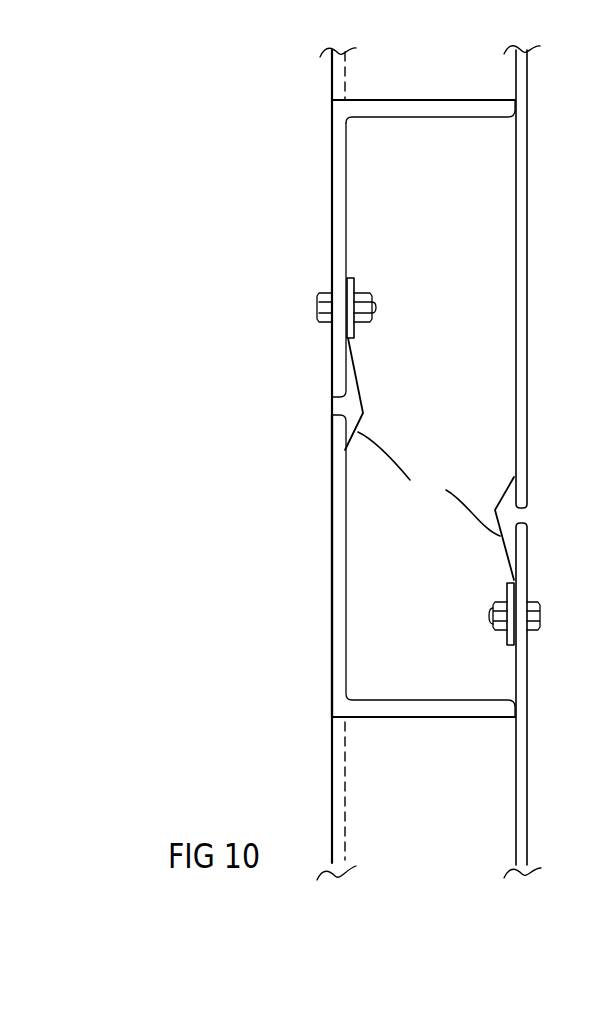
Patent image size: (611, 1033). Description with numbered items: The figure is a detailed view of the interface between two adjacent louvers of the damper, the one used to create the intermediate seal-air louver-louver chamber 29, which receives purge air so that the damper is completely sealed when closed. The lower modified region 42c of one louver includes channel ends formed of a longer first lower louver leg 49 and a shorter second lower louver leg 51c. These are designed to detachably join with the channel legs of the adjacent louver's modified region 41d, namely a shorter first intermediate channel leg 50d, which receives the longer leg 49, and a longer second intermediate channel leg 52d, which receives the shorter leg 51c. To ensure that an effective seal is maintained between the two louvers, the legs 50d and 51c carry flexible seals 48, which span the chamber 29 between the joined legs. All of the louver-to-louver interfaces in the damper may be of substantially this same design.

The intermediate seal-air louver-louver chamber 29 is at (447, 360).
The upper modified region of louver 11d 41d is at (307, 668).
The lower modified region of louver 11c 42c is at (300, 217).
The flexible seal 48 is at (429, 459).
The first lower louver leg 49 is at (527, 415).
The first intermediate channel leg 50d is at (527, 722).
The second lower louver leg 51c is at (332, 350).
The second intermediate channel leg 52d is at (332, 526).